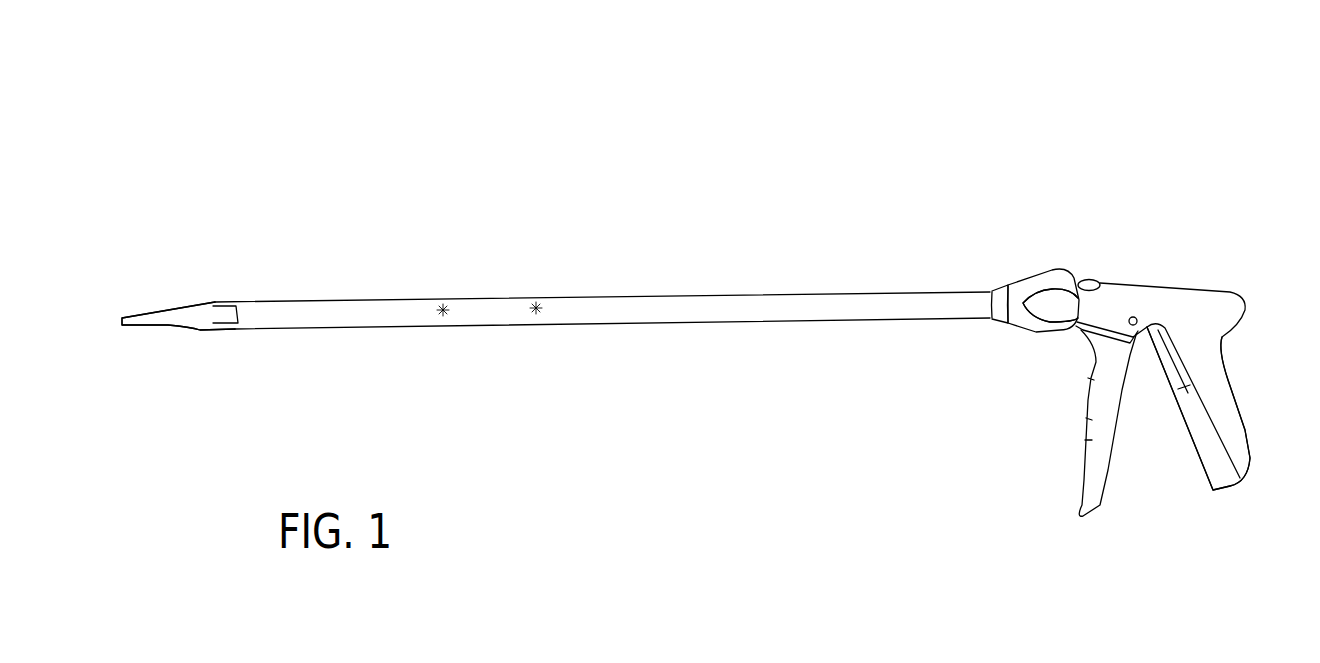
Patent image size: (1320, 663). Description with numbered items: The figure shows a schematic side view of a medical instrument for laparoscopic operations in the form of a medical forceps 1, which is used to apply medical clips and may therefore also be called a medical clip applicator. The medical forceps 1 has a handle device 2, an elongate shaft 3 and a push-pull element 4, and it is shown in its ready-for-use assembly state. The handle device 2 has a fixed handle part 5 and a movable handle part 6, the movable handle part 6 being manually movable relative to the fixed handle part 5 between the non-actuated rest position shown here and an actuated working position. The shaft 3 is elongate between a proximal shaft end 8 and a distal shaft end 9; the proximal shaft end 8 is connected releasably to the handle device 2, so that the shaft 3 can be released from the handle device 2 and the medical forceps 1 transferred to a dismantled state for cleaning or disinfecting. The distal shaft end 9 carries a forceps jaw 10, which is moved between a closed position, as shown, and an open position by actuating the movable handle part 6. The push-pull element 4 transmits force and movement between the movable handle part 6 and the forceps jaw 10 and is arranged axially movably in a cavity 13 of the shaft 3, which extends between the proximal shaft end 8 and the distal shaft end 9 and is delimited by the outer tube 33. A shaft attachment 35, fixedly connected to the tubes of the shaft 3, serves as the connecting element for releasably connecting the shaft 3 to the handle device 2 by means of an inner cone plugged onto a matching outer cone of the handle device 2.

The medical forceps 1 is at (657, 130).
The handle device 2 is at (1180, 268).
The shaft 3 is at (556, 258).
The push-pull element 4 is at (536, 313).
The fixed handle part 5 is at (1218, 375).
The movable handle part 6 is at (1092, 440).
The proximal shaft end 8 is at (1013, 266).
The distal shaft end 9 is at (185, 280).
The forceps jaw 10 is at (145, 292).
The cavity 13 is at (443, 315).
The outer tube 33 is at (690, 322).
The shaft attachment 35 is at (1030, 326).